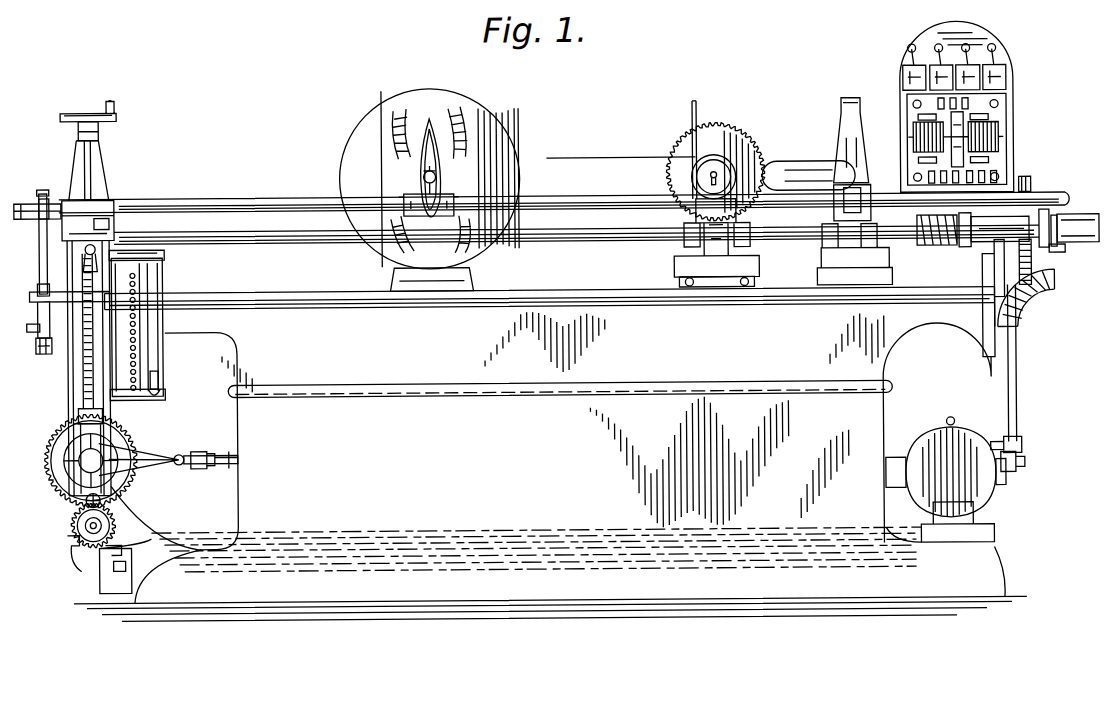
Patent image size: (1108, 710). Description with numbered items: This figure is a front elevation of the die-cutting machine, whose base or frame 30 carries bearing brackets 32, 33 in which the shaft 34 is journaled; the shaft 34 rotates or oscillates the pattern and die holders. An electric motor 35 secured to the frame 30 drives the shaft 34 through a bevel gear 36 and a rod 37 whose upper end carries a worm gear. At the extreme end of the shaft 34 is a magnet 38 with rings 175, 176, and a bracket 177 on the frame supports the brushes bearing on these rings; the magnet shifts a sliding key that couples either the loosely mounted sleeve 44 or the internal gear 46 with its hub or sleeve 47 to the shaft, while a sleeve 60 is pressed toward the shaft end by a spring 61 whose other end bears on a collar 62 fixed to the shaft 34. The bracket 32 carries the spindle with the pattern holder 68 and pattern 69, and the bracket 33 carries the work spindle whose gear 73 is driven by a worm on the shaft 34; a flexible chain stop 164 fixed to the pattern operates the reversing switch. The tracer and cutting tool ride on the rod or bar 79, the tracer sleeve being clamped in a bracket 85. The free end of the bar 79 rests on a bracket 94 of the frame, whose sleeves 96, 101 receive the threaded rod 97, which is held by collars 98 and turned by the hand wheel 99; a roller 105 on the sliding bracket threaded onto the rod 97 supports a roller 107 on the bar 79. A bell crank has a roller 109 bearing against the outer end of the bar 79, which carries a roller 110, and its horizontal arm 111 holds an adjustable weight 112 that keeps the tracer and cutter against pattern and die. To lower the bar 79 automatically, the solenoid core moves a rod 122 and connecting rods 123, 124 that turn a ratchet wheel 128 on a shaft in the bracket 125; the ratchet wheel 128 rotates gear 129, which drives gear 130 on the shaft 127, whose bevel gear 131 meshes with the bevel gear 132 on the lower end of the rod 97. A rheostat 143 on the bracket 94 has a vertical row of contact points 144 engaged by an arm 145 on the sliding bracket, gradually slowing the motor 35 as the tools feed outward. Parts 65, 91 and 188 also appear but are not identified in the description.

The base or frame 30 is at (205, 338).
The bearing bracket 32 is at (468, 278).
The bearing bracket 33 is at (677, 272).
The shaft 34 is at (583, 243).
The electric motor 35 is at (935, 440).
The bevel gear 36 is at (1010, 474).
The rod 37 is at (1017, 384).
The magnet 38 is at (1076, 220).
The sleeve 44 is at (985, 240).
The internal gear 46 is at (1034, 272).
The hub or sleeve 47 is at (1047, 215).
The sleeve 60 is at (928, 250).
The spring 61 is at (945, 240).
The collar 62 is at (882, 258).
The base plate 65 is at (745, 270).
The pattern holder 68 is at (518, 162).
The pattern 69 is at (438, 92).
The gear 73 is at (748, 160).
The rod or bar 79 is at (258, 200).
The bracket 85 is at (425, 178).
The dial 91 is at (722, 160).
The bracket 94 is at (105, 200).
The sleeve 96 is at (112, 494).
The rod 97 is at (98, 165).
The shoulders or collars 98 is at (100, 127).
The hand wheel 99 is at (118, 112).
The sleeve 101 is at (78, 410).
The roller 105 is at (96, 244).
The roller 107 is at (112, 213).
The roller 109 is at (42, 222).
The roller 110 is at (35, 202).
The horizontal arm 111 is at (38, 315).
The weight 112 is at (44, 350).
The rod 122 is at (223, 452).
The connecting rod 123 is at (158, 392).
The connecting rod 124 is at (176, 463).
The bracket 125 is at (124, 575).
The shaft 127 is at (88, 540).
The ratchet wheel 128 is at (50, 452).
The gear 129 is at (63, 470).
The gear 130 is at (70, 522).
The bevel gear 131 is at (84, 525).
The bevel gear 132 is at (85, 497).
The rheostat 143 is at (158, 275).
The contact points 144 is at (140, 302).
The arm 145 is at (150, 252).
The sectional stop 164 is at (405, 112).
The ring 175 is at (1062, 254).
The ring 176 is at (1058, 222).
The bracket 177 is at (1030, 302).
The rod 188 is at (40, 258).